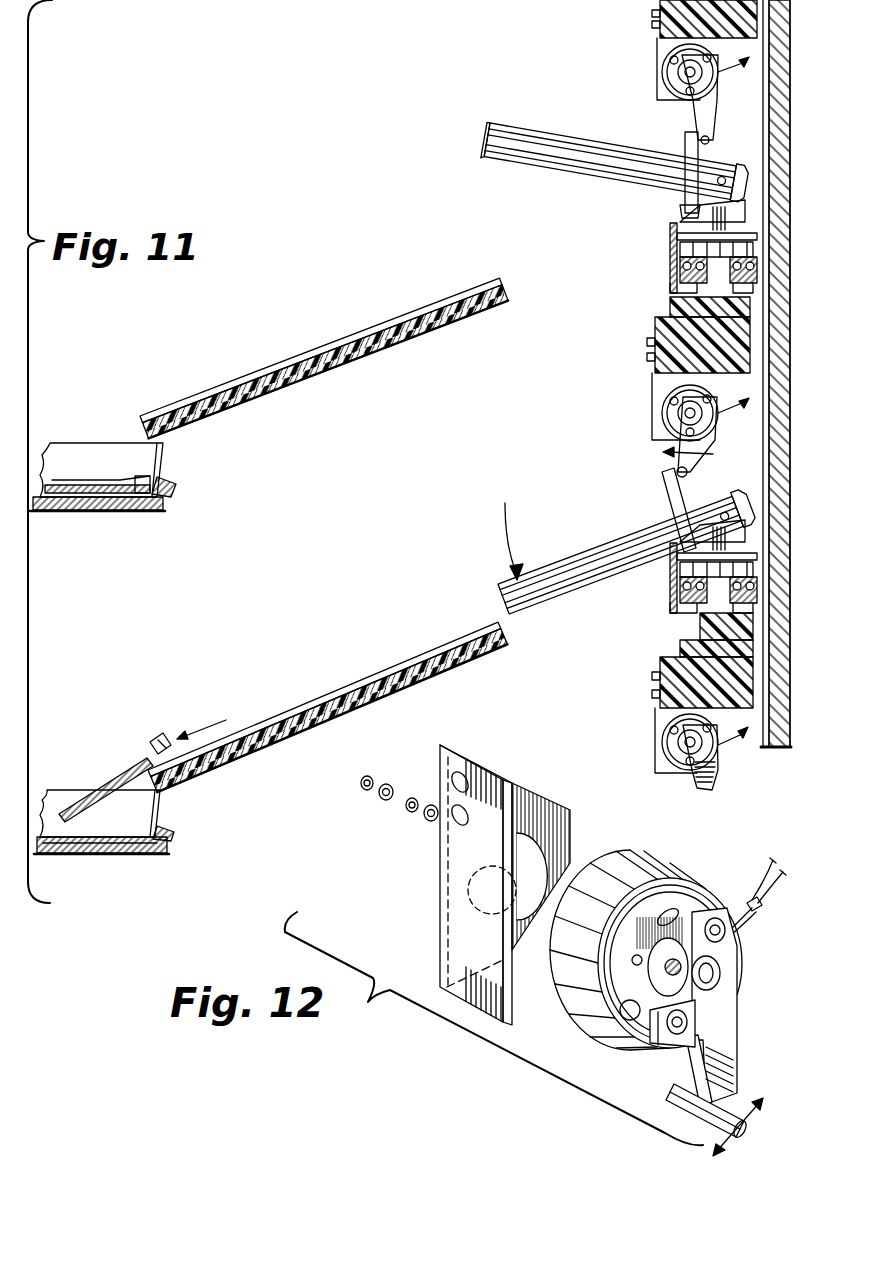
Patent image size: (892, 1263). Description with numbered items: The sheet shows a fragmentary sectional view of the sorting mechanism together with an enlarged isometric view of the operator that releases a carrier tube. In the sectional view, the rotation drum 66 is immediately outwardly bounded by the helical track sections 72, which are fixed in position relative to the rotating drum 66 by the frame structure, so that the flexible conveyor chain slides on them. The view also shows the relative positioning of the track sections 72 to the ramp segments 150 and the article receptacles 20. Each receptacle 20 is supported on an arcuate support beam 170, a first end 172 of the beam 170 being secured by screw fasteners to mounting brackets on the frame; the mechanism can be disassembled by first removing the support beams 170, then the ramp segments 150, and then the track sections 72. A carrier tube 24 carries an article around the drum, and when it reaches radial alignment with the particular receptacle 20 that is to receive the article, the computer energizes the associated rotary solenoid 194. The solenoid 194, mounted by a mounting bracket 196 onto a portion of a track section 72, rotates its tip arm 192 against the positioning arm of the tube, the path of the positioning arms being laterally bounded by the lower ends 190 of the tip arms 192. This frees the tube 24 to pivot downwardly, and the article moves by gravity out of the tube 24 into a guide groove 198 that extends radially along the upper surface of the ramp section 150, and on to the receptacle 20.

In FIG. 11, the receptacle 20 is at (87, 443).
In FIG. 11, the carrier tube 24 is at (542, 142).
In FIG. 11, the rotation drum 66 is at (783, 731).
In FIG. 11, the track section 72 is at (690, 18).
In FIG. 11, the ramp segment 150 is at (300, 381).
In FIG. 11, the support beam 170 is at (174, 837).
In FIG. 11, the first end of beam segment 172 is at (176, 493).
In FIG. 12, the lower end of tip arm 190 is at (680, 1096).
In FIG. 12, the tip arm 192 is at (703, 1057).
In FIG. 12, the rotary solenoid 194 is at (650, 862).
In FIG. 12, the mounting bracket 196 is at (452, 880).
In FIG. 11, the guide groove 198 is at (228, 382).